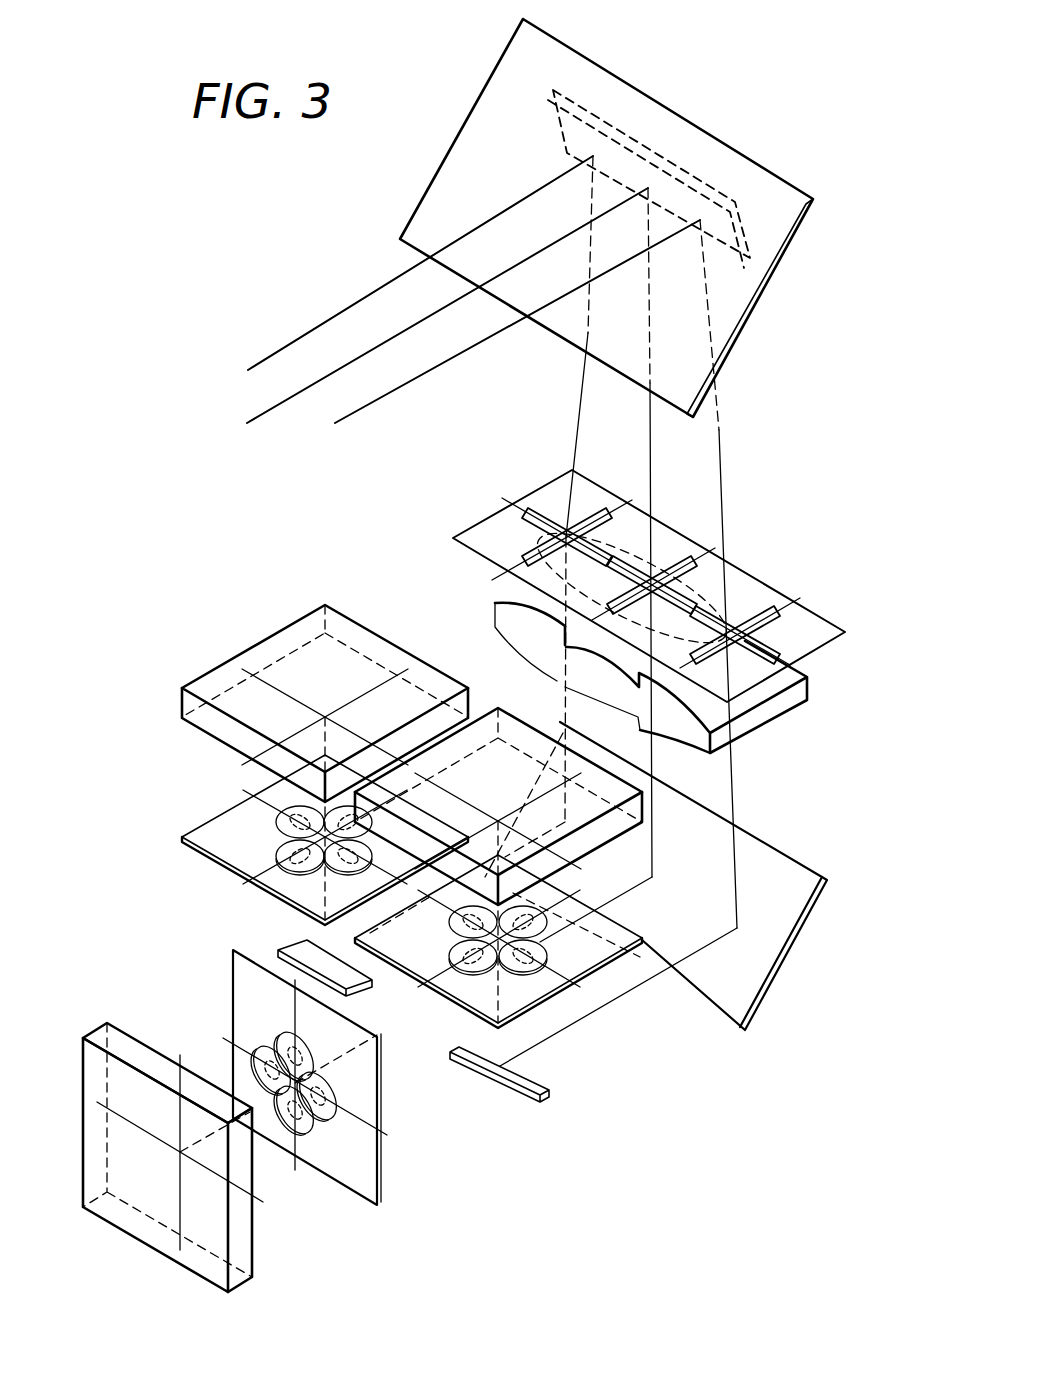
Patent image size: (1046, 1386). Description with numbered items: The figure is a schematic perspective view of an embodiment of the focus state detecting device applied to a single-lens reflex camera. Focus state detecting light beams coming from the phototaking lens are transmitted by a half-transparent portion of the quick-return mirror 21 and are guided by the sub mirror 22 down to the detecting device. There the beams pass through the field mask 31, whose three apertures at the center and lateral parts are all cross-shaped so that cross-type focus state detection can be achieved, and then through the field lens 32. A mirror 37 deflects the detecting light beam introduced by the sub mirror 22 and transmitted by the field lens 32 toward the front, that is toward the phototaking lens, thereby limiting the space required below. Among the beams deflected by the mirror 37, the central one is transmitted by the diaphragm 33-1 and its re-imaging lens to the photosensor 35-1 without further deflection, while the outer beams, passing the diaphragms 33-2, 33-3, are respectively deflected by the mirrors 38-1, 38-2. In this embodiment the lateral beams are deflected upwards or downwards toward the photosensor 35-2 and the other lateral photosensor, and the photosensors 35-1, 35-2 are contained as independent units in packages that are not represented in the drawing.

The quick-return mirror 21 is at (733, 312).
The sub mirror 22 is at (702, 180).
The field mask 31 is at (755, 592).
The field lens 32 is at (773, 708).
The diaphragm 33-1 is at (380, 1192).
The diaphragm 33-2 is at (213, 826).
The diaphragm 33-3 is at (560, 1000).
The photosensor 35-1 is at (563, 740).
The photosensor 35-2 is at (265, 648).
The mirror 37 is at (723, 1003).
The mirror 38-1 is at (280, 950).
The mirror 38-2 is at (512, 1100).